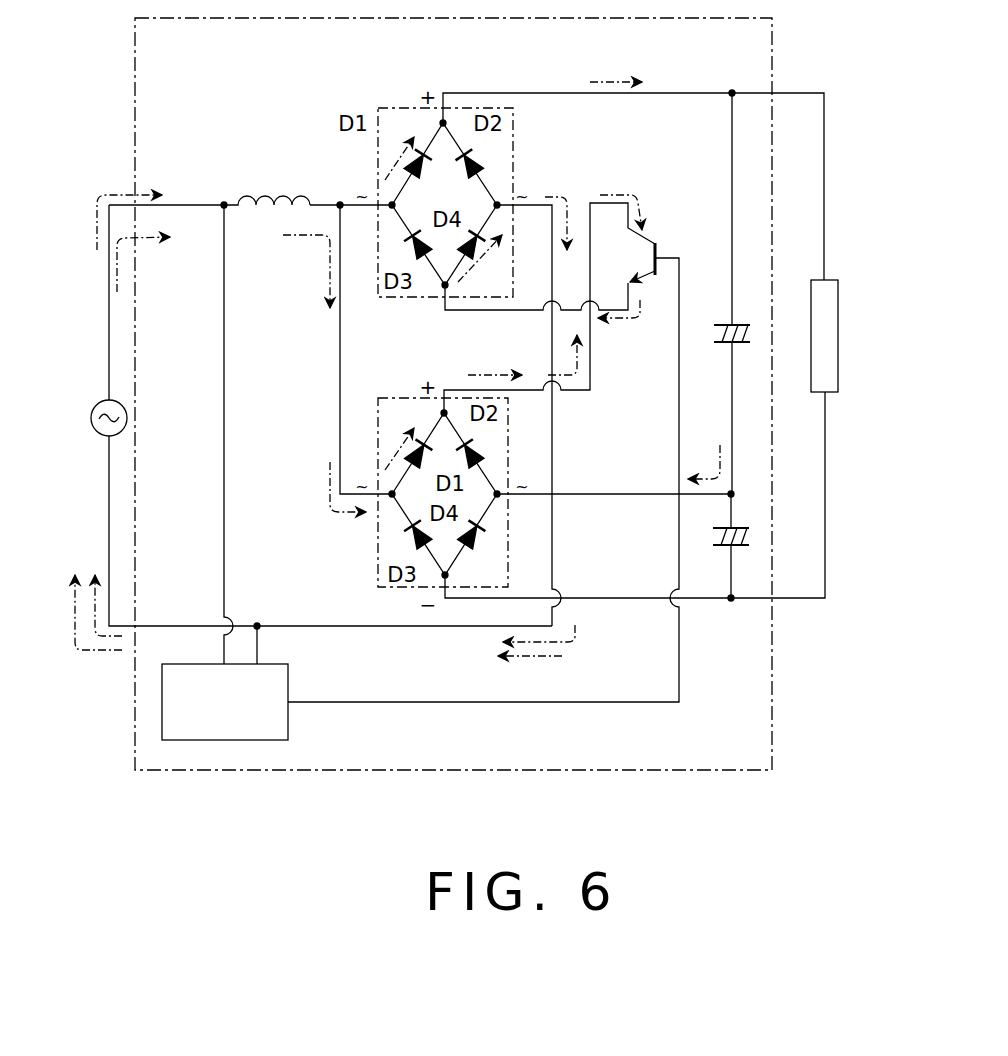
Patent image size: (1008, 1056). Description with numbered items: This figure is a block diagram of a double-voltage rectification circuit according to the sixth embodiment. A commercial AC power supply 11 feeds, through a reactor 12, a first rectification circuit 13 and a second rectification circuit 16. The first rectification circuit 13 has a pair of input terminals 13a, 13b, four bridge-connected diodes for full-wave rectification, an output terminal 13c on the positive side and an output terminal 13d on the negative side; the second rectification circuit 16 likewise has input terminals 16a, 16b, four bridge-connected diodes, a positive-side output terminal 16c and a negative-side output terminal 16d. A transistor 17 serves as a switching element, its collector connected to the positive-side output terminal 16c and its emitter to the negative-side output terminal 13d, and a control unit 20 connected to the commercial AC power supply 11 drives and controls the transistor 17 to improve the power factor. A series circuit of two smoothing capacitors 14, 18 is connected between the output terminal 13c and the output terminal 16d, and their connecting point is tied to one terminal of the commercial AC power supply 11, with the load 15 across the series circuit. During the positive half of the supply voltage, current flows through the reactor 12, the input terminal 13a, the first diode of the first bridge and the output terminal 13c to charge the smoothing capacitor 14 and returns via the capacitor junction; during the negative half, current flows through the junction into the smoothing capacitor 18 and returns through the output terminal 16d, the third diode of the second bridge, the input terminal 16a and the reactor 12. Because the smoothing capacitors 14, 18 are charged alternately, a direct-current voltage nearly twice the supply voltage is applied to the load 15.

The commercial AC power supply 11 is at (99, 404).
The reactor 12 is at (272, 196).
The first rectification circuit 13 is at (398, 106).
The input terminal 13a is at (390, 204).
The input terminal 13b is at (499, 204).
The output terminal on the positive side 13c is at (445, 122).
The output terminal on the negative side 13d is at (444, 286).
The smoothing capacitor 14 is at (726, 322).
The load 15 is at (832, 280).
The second rectification circuit 16 is at (399, 396).
The input terminal 16a is at (391, 496).
The input terminal 16b is at (498, 493).
The output terminal on the positive side 16c is at (445, 412).
The output terminal on the negative side 16d is at (444, 576).
The transistor 17 is at (641, 241).
The smoothing capacitor 18 is at (726, 546).
The control unit 20 is at (289, 691).